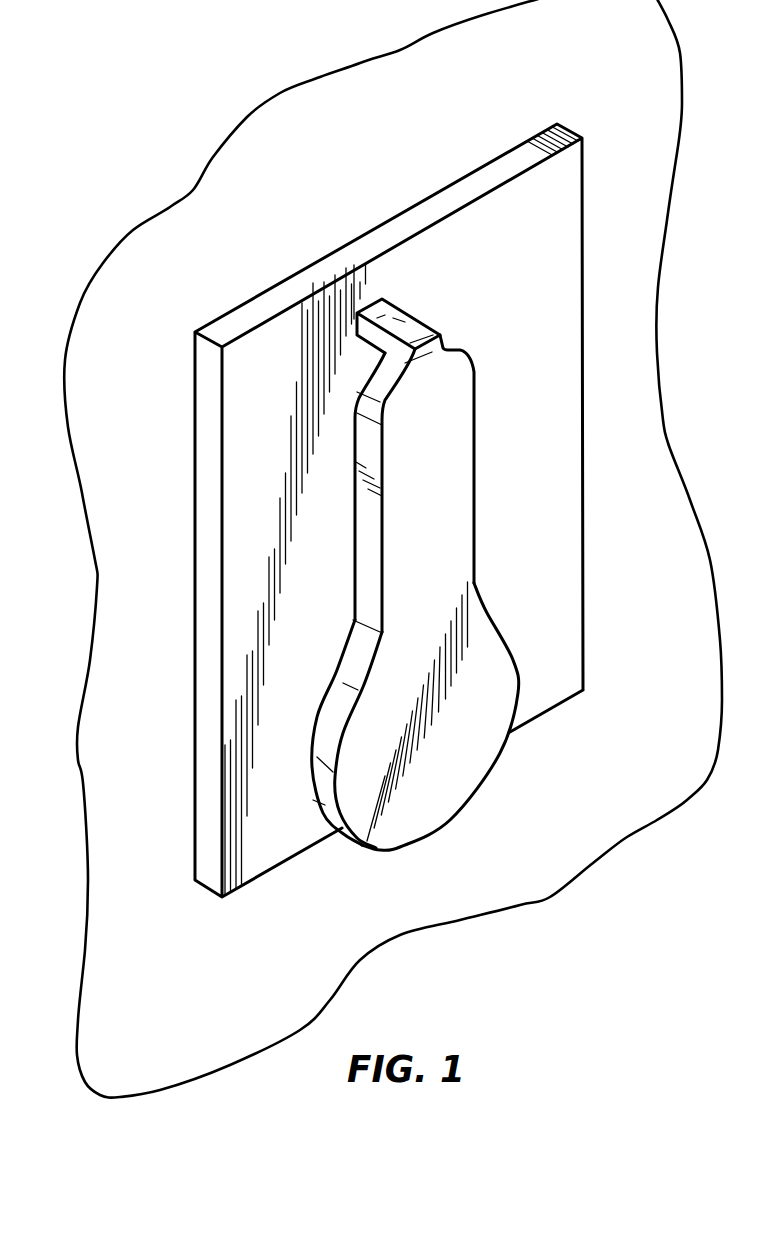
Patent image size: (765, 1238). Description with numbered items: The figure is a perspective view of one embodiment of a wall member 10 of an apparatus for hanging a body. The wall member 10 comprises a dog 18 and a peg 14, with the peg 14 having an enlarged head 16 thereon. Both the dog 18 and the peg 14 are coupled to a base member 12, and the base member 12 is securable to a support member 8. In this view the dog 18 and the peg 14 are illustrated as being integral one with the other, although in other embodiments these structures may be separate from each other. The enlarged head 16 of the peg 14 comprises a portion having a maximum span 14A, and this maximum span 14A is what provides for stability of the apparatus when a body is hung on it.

The support member 8 is at (163, 987).
The wall member 10 is at (434, 522).
The base member 12 is at (553, 255).
The peg 14 is at (458, 772).
The maximum span 14A is at (518, 688).
The enlarged head 16 is at (467, 627).
The dog 18 is at (393, 307).